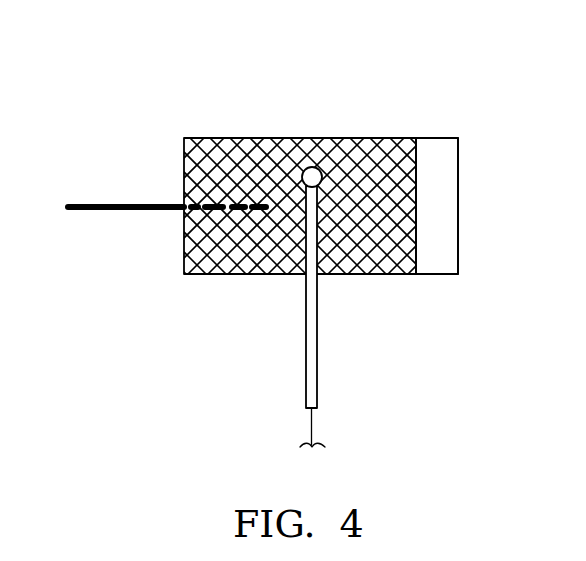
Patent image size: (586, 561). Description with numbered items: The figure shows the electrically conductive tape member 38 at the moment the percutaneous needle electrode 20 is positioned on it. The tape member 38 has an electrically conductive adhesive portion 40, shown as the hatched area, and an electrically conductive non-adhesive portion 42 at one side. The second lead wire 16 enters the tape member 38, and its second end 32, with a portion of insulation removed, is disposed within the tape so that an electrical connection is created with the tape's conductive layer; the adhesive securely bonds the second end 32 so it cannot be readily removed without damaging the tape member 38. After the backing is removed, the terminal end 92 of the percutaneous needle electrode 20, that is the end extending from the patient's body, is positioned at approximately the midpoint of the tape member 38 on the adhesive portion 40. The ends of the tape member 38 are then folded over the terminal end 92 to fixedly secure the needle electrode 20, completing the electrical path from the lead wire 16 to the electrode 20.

The second lead wire 16 is at (103, 213).
The percutaneous needle electrode 20 is at (311, 422).
The second end of the second lead wire 32 is at (194, 236).
The electrically conductive tape member 38 is at (241, 106).
The electrically conductive adhesive portion 40 is at (244, 258).
The electrically conductive non-adhesive portion 42 is at (440, 265).
The terminal end of the percutaneous needle electrode 92 is at (313, 172).